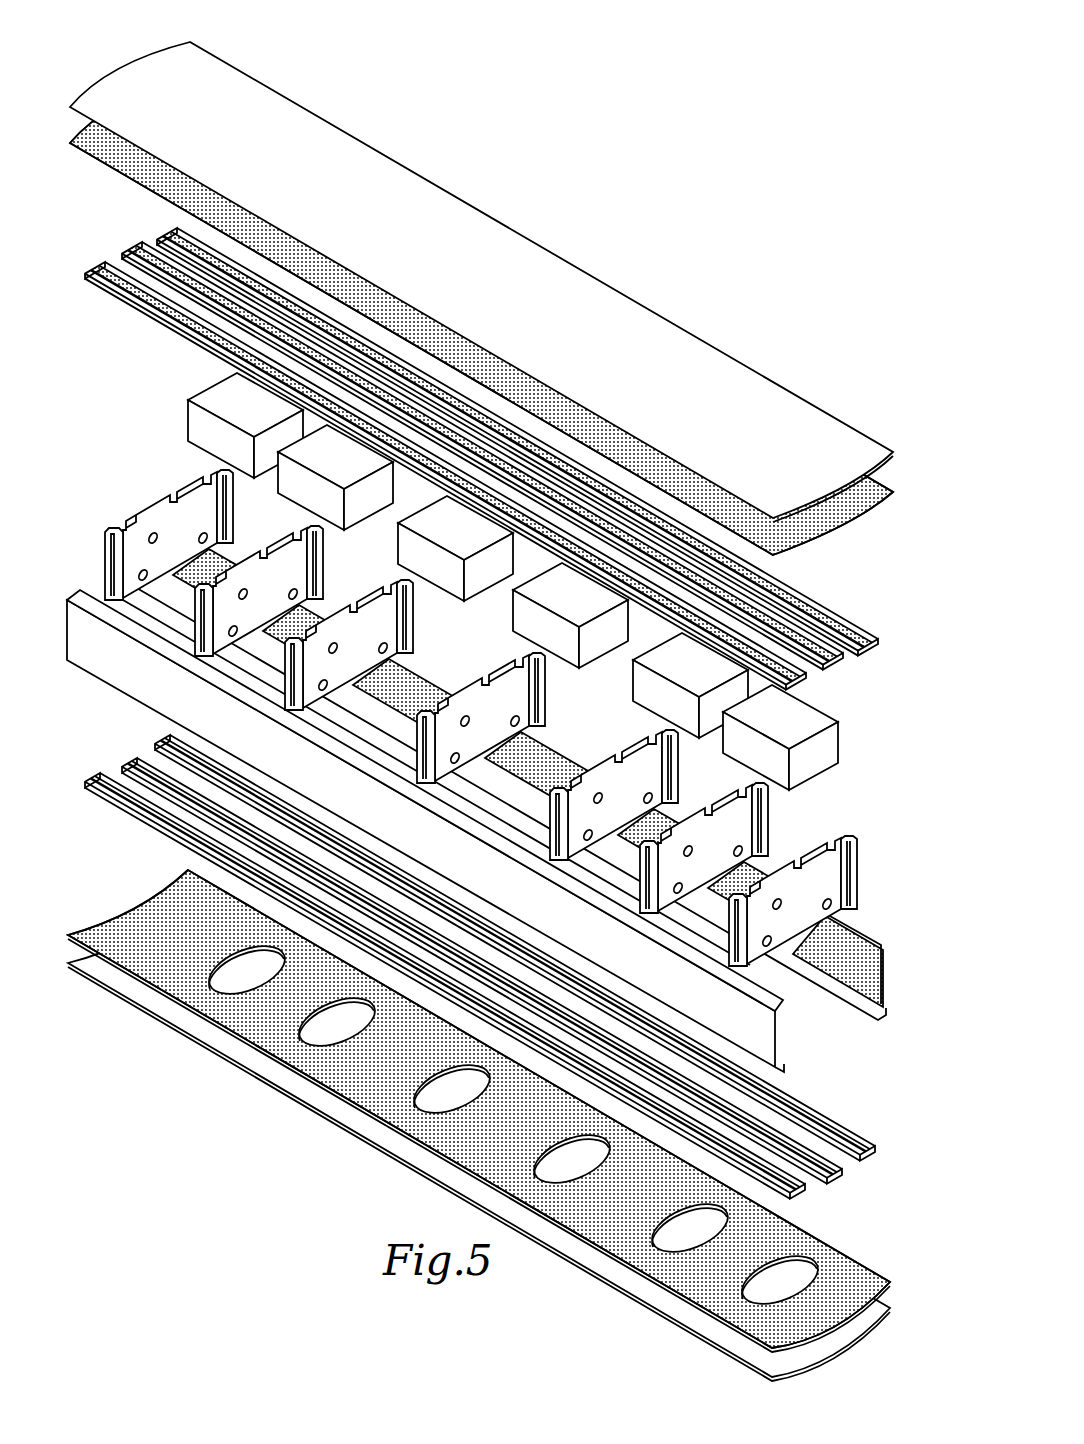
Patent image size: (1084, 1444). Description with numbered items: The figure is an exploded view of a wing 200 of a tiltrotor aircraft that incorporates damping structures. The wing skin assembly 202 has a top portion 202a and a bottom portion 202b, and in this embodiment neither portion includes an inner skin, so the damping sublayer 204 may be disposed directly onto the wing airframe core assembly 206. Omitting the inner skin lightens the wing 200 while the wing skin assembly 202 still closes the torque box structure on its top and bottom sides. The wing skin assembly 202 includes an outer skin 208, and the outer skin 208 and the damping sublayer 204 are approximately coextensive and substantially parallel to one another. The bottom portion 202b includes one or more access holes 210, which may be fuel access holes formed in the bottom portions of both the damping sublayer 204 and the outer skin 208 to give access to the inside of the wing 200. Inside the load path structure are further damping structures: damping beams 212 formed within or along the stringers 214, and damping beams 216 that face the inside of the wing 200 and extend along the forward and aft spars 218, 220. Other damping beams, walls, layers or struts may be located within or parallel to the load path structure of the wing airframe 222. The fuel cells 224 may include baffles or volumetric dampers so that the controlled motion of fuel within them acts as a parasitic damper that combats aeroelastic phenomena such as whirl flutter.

The wing 200 is at (528, 158).
The wing skin assembly 202 is at (108, 78).
The top portion of wing skin assembly 202a is at (481, 282).
The bottom portion of wing skin assembly 202b is at (110, 905).
The damping sublayer 204 is at (110, 160).
The wing airframe core assembly 206 is at (122, 438).
The outer skin 208 is at (618, 310).
The access holes 210 is at (430, 1085).
The damping beams 212 is at (792, 597).
The stringers 214 is at (857, 653).
The damping beams 216 is at (830, 957).
The forward spar 218 is at (765, 1058).
The aft spar 220 is at (880, 943).
The wing airframe 222 is at (481, 718).
The fuel cells 224 is at (818, 753).